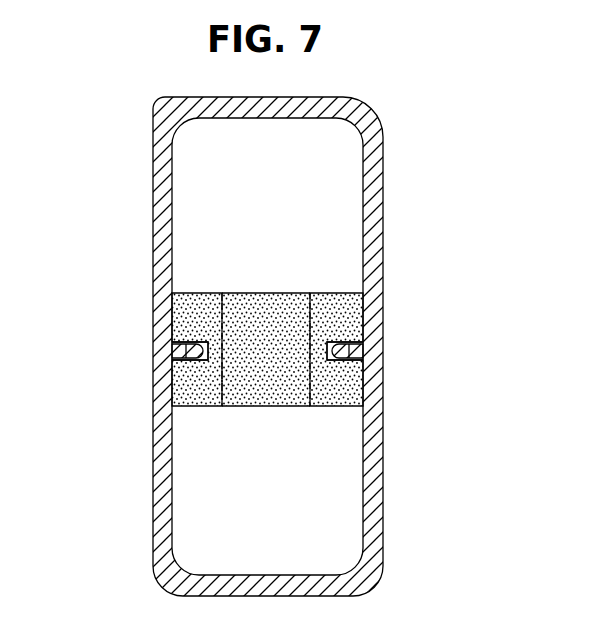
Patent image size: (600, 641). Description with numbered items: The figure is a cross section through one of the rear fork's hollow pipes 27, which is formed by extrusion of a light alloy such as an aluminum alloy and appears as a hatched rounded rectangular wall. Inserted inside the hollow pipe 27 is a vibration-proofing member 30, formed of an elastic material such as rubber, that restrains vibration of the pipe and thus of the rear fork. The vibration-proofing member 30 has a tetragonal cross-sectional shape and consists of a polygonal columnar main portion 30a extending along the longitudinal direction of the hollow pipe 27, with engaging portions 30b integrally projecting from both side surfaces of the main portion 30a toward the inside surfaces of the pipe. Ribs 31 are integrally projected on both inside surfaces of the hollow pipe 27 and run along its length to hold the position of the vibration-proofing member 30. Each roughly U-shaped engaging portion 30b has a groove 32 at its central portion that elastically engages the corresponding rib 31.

The hollow pipe 27 is at (160, 204).
The vibration-proofing member 30 is at (285, 340).
The vibration-proofing member main portion 30a is at (263, 395).
The engaging portion 30b is at (190, 389).
The rib 31 is at (192, 343).
The groove 32 is at (190, 347).